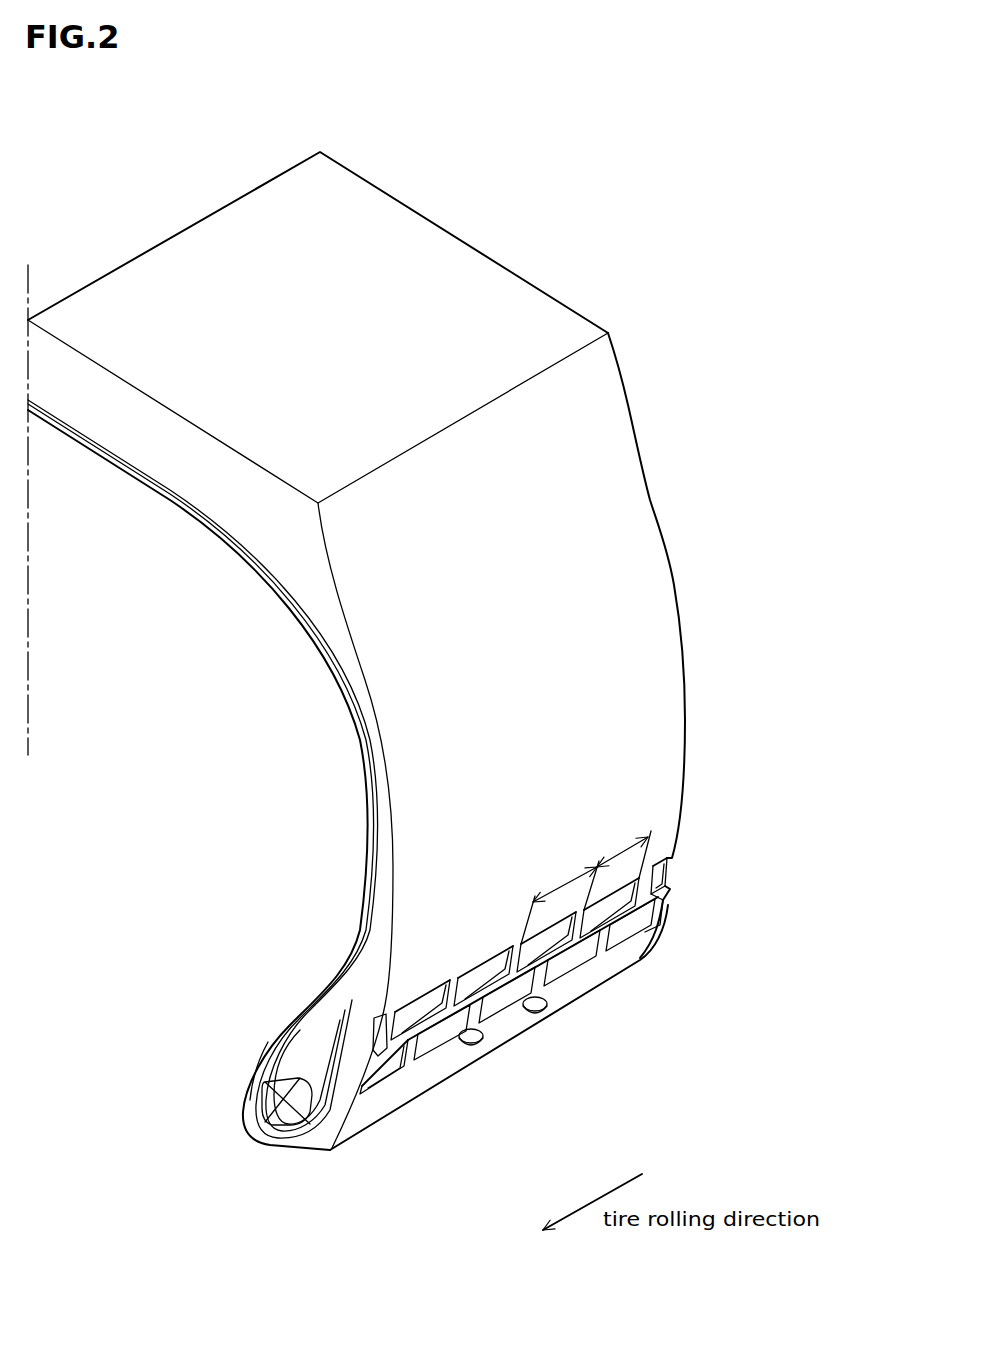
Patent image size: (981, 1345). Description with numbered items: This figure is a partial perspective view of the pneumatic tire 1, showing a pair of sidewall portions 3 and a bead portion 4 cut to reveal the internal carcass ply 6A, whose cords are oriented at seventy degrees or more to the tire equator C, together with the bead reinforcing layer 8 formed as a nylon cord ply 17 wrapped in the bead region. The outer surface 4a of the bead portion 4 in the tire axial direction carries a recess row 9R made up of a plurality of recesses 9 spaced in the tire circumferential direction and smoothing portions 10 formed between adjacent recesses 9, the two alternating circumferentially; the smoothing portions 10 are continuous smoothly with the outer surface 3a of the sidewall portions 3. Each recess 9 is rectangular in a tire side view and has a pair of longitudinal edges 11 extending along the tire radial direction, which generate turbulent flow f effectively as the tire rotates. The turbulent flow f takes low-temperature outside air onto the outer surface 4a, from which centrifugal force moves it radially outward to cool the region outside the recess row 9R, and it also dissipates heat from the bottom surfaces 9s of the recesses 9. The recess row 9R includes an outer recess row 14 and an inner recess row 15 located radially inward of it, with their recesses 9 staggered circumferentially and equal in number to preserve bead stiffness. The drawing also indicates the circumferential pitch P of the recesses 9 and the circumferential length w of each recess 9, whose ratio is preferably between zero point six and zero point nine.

The tire 1 is at (478, 228).
The tire equator C is at (28, 497).
The sidewall portions 3 is at (690, 638).
The outer surface of sidewall portions 3a is at (640, 722).
The bead portions 4 is at (240, 1097).
The outer surface of bead portion 4a is at (590, 1020).
The carcass ply 6A is at (378, 836).
The bead reinforcing layer 8 is at (327, 1100).
The nylon cord ply 17 is at (296, 1135).
The recesses 9 is at (490, 965).
The bottom surfaces of recesses 9s is at (673, 860).
The recess row 9R is at (763, 833).
The outer recess row 14 is at (672, 866).
The inner recess row 15 is at (667, 908).
The smoothing portions 10 is at (603, 953).
The longitudinal edges 11 is at (575, 990).
The turbulent flow f is at (545, 1040).
The pitch P is at (560, 894).
The length of recesses w is at (624, 847).